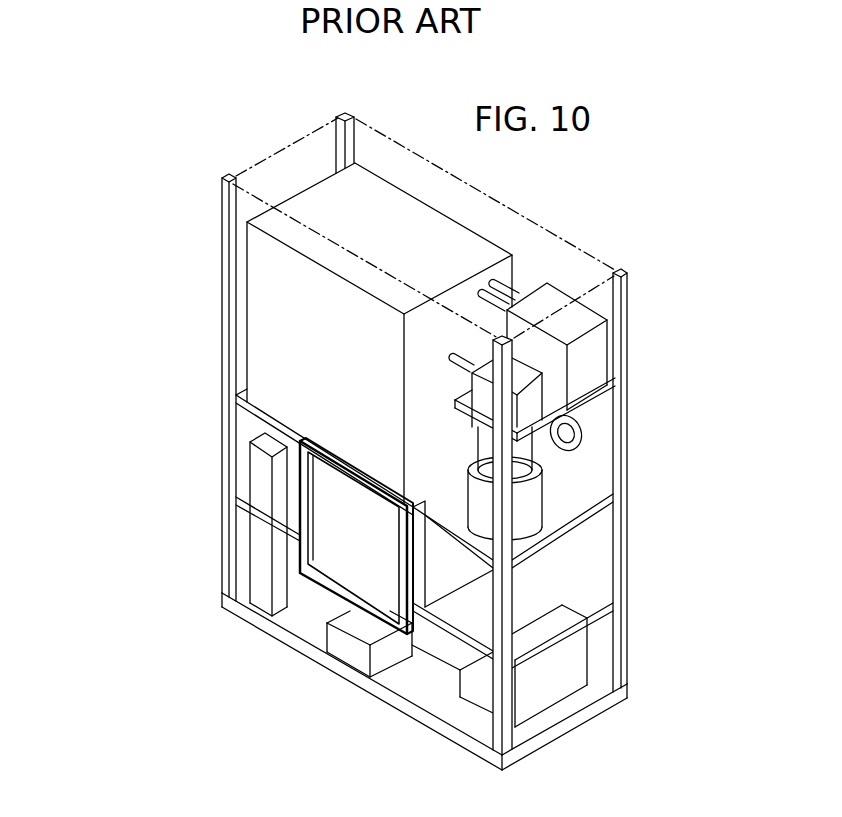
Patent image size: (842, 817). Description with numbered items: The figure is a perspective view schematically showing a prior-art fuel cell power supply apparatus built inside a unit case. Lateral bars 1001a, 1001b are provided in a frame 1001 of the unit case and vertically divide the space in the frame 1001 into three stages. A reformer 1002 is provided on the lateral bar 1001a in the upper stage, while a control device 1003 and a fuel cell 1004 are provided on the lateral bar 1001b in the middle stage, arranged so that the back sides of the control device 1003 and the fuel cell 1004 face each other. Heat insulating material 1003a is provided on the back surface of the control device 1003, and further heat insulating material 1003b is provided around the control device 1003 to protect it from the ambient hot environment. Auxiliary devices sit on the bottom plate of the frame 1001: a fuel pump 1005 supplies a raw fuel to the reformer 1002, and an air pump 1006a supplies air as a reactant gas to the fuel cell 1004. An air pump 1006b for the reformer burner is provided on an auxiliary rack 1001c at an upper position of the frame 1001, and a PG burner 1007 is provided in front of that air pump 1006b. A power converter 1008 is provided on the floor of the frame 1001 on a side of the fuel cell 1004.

The frame 1001 is at (631, 440).
The lateral bar 1001a is at (228, 400).
The lateral bar 1001b is at (230, 500).
The auxiliary rack 1001c is at (610, 395).
The reformer 1002 is at (264, 355).
The control device 1003 is at (335, 562).
The heat insulating material 1003a is at (320, 538).
The heat insulating material 1003b is at (440, 592).
The fuel cell 1004 is at (452, 612).
The fuel pump 1005 is at (347, 650).
The air pump 1006a is at (573, 669).
The air pump for reformer burner 1006b is at (593, 350).
The PG burner 1007 is at (523, 510).
The power converter 1008 is at (262, 463).